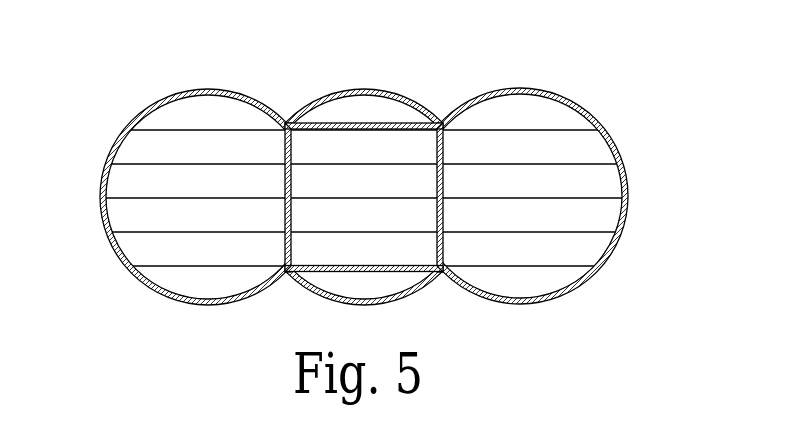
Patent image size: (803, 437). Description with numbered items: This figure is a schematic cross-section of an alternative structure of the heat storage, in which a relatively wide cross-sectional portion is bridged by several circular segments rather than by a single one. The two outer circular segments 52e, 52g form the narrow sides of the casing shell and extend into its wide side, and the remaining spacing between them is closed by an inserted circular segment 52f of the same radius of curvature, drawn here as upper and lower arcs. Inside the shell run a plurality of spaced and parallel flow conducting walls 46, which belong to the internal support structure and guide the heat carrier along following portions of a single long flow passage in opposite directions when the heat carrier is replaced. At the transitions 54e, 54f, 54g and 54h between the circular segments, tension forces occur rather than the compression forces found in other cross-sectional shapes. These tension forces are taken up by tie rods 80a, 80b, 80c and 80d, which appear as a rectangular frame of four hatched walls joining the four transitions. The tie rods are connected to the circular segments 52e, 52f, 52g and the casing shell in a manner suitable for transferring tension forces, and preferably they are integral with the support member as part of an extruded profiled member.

The flow conducting wall 46 is at (157, 163).
The circular segment 52e is at (237, 90).
The inserted circular segment 52f is at (358, 90).
The circular segment 52g is at (547, 90).
The transition 54e is at (287, 120).
The transition 54f is at (290, 273).
The transition 54g is at (442, 115).
The transition 54h is at (445, 275).
The tie rod 80a is at (283, 180).
The tie rod 80b is at (447, 180).
The tie rod 80c is at (370, 122).
The tie rod 80d is at (347, 272).